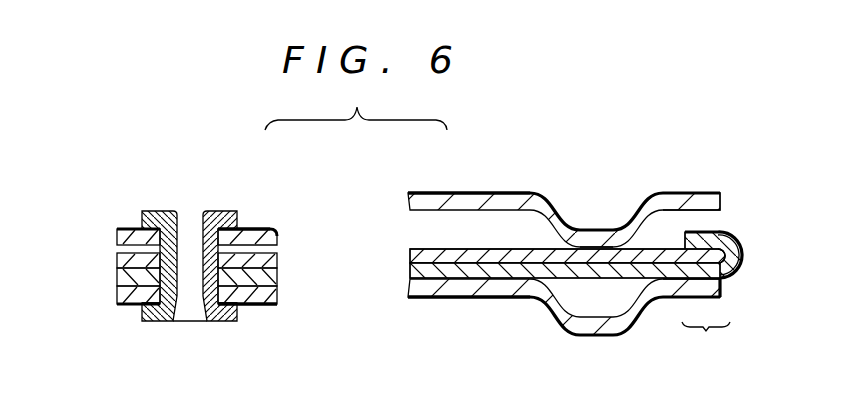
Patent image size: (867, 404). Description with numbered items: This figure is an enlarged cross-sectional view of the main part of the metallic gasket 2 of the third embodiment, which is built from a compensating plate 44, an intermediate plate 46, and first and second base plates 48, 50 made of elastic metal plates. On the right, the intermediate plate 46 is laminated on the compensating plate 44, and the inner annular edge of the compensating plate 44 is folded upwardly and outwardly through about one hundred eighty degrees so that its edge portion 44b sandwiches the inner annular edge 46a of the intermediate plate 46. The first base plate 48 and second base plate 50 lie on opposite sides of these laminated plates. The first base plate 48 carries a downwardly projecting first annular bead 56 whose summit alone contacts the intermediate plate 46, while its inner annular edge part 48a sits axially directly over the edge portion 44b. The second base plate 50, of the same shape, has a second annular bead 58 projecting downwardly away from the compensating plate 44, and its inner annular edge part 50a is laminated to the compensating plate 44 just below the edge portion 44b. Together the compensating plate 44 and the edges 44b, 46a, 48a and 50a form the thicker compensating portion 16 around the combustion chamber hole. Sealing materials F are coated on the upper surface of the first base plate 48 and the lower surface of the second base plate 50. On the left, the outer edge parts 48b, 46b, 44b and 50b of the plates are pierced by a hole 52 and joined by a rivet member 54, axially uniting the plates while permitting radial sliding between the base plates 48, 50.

The metallic gasket 2 is at (649, 142).
The compensating portion 16 is at (706, 342).
The compensating plate 44 is at (281, 284).
The edge portion of compensating plate 44b is at (125, 277).
The intermediate plate 46 is at (279, 260).
The inner annular edge of intermediate plate 46a is at (733, 250).
The outer edge part of intermediate plate 46b is at (118, 258).
The first base plate 48 is at (249, 236).
The inner annular edge part of first base plate 48a is at (690, 200).
The outer edge part of first base plate 48b is at (128, 236).
The second base plate 50 is at (253, 300).
The inner annular edge part of second base plate 50a is at (713, 288).
The outer edge part of second base plate 50b is at (131, 305).
The hole 52 is at (164, 263).
The rivet member 54 is at (216, 313).
The first annular bead 56 is at (613, 232).
The second annular bead 58 is at (607, 322).
The sealing materials F is at (269, 226).